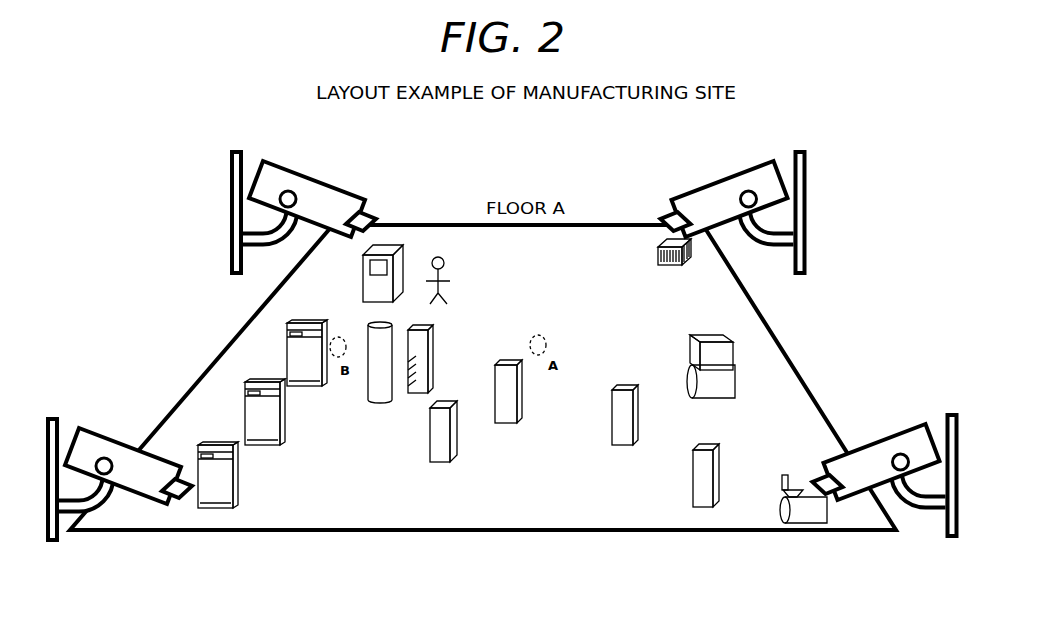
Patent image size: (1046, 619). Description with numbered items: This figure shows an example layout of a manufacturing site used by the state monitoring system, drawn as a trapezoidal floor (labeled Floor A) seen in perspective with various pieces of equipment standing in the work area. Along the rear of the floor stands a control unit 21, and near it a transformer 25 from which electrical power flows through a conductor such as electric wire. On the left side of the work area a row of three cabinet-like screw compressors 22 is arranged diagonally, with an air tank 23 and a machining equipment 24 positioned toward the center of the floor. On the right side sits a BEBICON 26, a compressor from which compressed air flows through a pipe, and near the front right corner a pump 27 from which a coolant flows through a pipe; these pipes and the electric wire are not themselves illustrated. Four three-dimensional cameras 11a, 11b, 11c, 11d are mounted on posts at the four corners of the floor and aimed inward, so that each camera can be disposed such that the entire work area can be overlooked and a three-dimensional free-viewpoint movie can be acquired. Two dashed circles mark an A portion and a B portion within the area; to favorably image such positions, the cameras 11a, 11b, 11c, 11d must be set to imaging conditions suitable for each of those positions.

The 3D camera 11a is at (108, 450).
The 3D camera 11b is at (288, 180).
The 3D camera 11c is at (892, 448).
The 3D camera 11d is at (740, 180).
The control unit 21 is at (398, 256).
The screw compressor 22 is at (300, 350).
The air tank 23 is at (425, 322).
The machining equipment 24 is at (437, 440).
The transformer 25 is at (655, 245).
The BEBICON 26 is at (707, 340).
The pump 27 is at (810, 512).